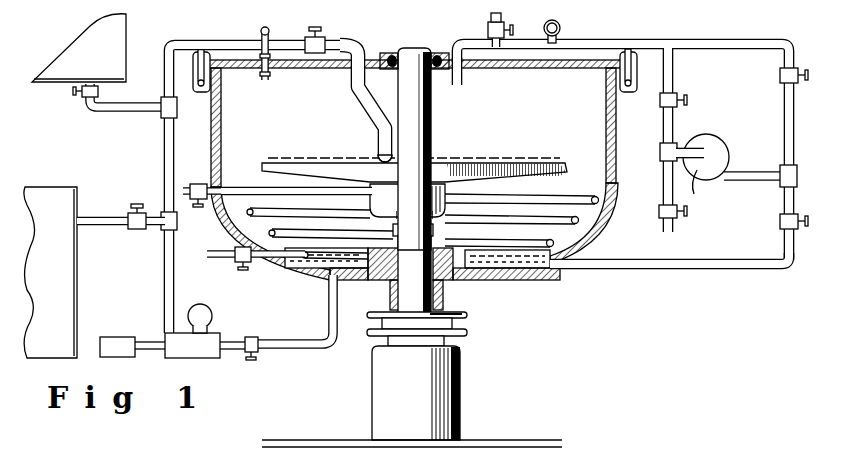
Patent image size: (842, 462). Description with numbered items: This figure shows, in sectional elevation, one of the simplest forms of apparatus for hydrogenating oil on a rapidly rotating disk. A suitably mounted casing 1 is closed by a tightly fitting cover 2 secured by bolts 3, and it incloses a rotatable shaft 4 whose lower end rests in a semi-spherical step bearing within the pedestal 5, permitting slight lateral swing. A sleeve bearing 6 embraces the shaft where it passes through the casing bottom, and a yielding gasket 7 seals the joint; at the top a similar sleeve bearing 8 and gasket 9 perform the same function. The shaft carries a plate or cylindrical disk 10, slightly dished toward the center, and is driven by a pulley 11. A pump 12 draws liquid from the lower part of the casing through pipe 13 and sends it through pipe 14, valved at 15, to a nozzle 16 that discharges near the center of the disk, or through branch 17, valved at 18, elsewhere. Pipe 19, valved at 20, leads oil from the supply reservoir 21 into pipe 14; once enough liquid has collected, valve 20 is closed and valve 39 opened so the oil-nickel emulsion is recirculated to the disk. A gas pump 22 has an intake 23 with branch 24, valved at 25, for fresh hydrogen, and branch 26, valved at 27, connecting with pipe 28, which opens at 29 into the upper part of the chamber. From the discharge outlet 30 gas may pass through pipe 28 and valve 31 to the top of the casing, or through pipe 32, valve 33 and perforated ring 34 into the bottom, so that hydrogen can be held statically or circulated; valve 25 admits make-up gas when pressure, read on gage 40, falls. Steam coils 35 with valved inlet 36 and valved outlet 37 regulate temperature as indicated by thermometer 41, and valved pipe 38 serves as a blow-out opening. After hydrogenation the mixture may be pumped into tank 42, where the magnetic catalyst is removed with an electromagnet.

The casing 1 is at (618, 133).
The cover 2 is at (580, 68).
The bolts 3 is at (192, 70).
The shaft 4 is at (418, 125).
The pedestal 5 is at (416, 388).
The bearing housing 6 is at (444, 292).
The gasket 7 is at (385, 281).
The sleeve bearing 8 is at (396, 50).
The gasket 9 is at (385, 54).
The disk 10 is at (484, 160).
The pulley 11 is at (470, 320).
The pump 12 is at (172, 331).
The pipe 13 is at (292, 344).
The pipe 14 is at (210, 40).
The valve 15 is at (321, 30).
The nozzle 16 is at (378, 145).
The branch 17 is at (90, 220).
The valve 18 is at (137, 204).
The pipe 19 is at (133, 113).
The valve 20 is at (80, 95).
The supply reservoir 21 is at (79, 48).
The gas pump 22 is at (716, 147).
The intake 23 is at (696, 186).
The branch 24 is at (664, 187).
The valve 25 is at (658, 211).
The branch 26 is at (677, 121).
The valve 27 is at (687, 100).
The pipe 28 is at (660, 40).
The opening 29 is at (458, 84).
The discharge outlet 30 is at (756, 183).
The valve 31 is at (779, 75).
The pipe 32 is at (726, 260).
The valve 33 is at (779, 222).
The perforated ring 34 is at (487, 268).
The steam coils 35 is at (262, 190).
The valved inlet 36 is at (196, 184).
The valved outlet 37 is at (216, 252).
The valved pipe 38 is at (490, 13).
The valve 39 is at (260, 351).
The gage 40 is at (561, 25).
The thermometer 41 is at (268, 30).
The tank 42 is at (64, 277).